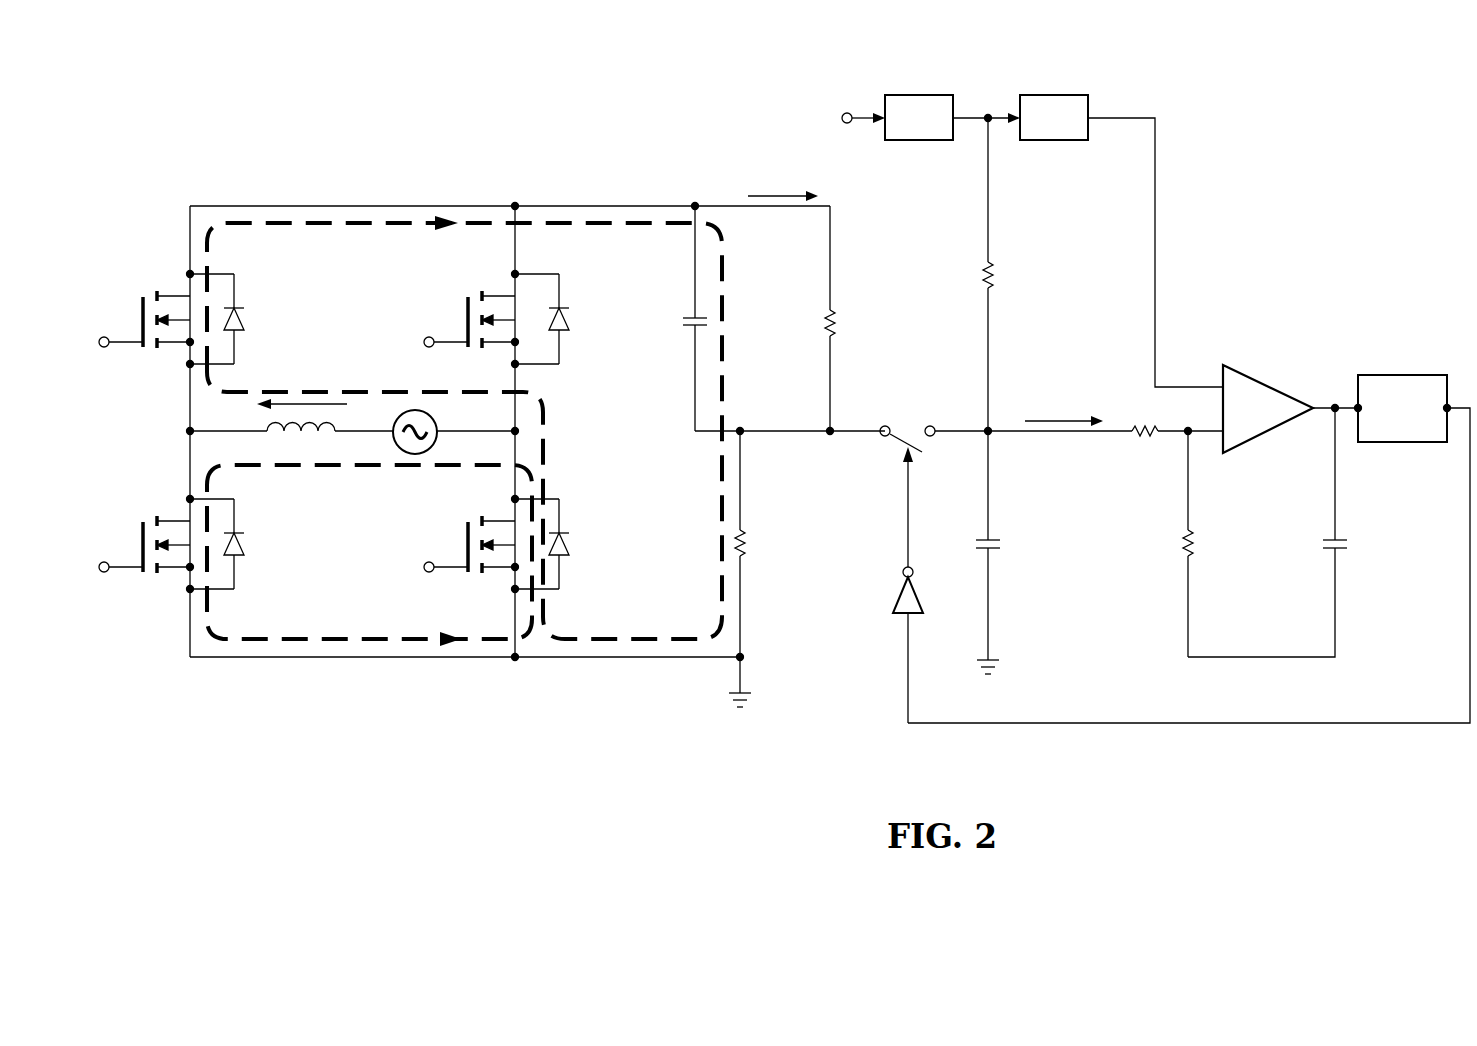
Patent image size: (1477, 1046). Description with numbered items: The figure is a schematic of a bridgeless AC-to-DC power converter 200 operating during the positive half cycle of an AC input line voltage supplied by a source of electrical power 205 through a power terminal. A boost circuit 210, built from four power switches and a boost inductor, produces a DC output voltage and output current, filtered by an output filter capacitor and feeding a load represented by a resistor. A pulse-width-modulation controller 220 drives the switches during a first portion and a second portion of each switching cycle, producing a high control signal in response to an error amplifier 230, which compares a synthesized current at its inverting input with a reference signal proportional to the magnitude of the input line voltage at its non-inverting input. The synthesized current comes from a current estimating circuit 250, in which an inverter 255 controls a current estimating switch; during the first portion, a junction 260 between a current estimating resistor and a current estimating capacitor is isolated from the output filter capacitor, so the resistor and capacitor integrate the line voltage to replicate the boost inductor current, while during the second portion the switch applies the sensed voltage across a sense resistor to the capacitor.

The bridgeless AC-to-DC power converter 200 is at (306, 125).
The source of electrical power 205 is at (415, 410).
The boost circuit 210 is at (515, 673).
The PWM controller 220 is at (1400, 375).
The error amplifier 230 is at (1270, 386).
The current estimating circuit 250 is at (1010, 740).
The inverter 255 is at (902, 590).
The junction 260 is at (990, 437).